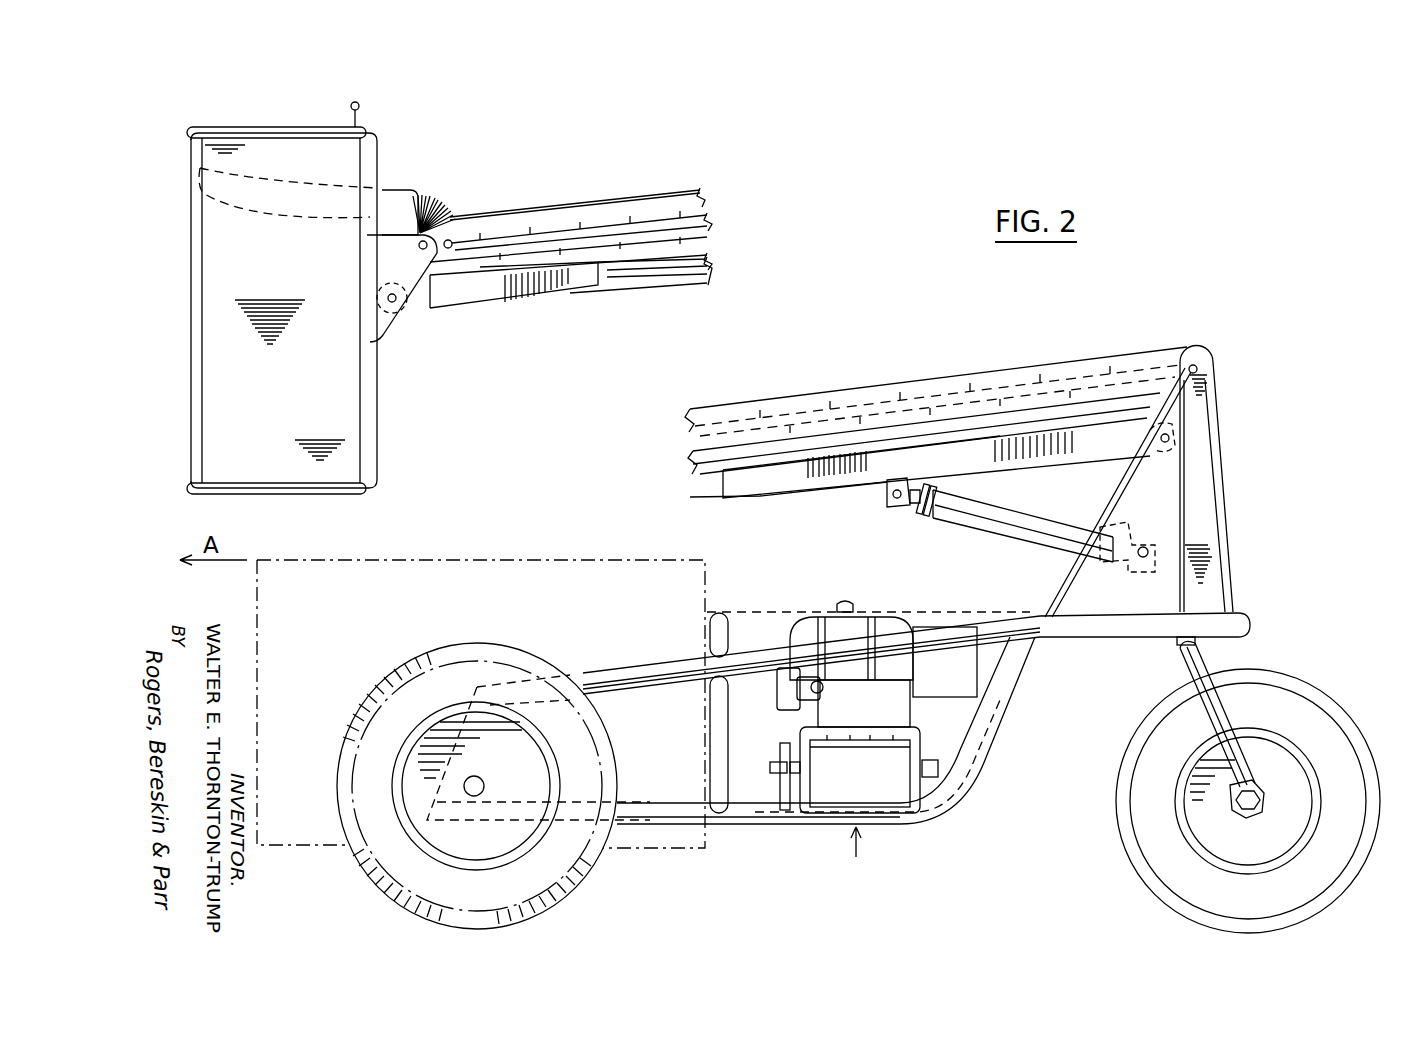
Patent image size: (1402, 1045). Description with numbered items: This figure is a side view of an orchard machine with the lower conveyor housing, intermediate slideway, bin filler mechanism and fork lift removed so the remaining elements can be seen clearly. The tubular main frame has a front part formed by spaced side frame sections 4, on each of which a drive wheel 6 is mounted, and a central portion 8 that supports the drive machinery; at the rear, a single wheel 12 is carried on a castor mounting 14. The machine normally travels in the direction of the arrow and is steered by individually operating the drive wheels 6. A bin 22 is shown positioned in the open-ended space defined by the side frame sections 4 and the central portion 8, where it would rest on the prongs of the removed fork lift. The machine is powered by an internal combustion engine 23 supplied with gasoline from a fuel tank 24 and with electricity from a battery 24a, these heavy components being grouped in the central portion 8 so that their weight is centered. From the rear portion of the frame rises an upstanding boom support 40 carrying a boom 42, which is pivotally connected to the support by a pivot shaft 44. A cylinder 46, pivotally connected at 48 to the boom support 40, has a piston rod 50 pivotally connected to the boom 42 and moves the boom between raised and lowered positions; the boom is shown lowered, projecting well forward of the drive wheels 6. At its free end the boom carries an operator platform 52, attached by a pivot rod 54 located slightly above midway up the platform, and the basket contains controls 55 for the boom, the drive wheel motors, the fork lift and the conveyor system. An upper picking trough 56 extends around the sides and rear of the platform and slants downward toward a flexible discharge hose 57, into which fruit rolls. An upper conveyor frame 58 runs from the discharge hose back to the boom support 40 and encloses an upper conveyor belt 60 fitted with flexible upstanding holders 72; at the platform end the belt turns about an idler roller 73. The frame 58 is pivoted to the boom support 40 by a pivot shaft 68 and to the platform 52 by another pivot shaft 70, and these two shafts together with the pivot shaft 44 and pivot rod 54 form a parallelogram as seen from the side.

The side frame section 4 is at (652, 813).
The drive wheel 6 is at (577, 883).
The central portion 8 is at (855, 859).
The single wheel 12 is at (1285, 672).
The castor mounting 14 is at (1177, 647).
The bin 22 is at (530, 562).
The internal combustion engine 23 is at (893, 693).
The fuel tank 24 is at (810, 612).
The battery 24a is at (890, 767).
The boom support 40 is at (1222, 385).
The boom 42 is at (700, 272).
The pivot shaft 44 is at (1165, 445).
The cylinder 46 is at (1010, 525).
The pivot connection 48 is at (1145, 545).
The piston rod 50 is at (920, 503).
The platform 52 is at (377, 440).
The pivot rod 54 is at (395, 303).
The controls 55 is at (362, 103).
The upper picking trough 56 is at (275, 208).
The flexible discharge hose 57 is at (437, 213).
The upper conveyor frame 58 is at (662, 192).
The upper conveyor belt 60 is at (595, 217).
The pivot shaft 68 is at (1198, 368).
The pivot shaft 70 is at (412, 243).
The flexible upstanding holder 72 is at (530, 225).
The idler roller 73 is at (452, 242).